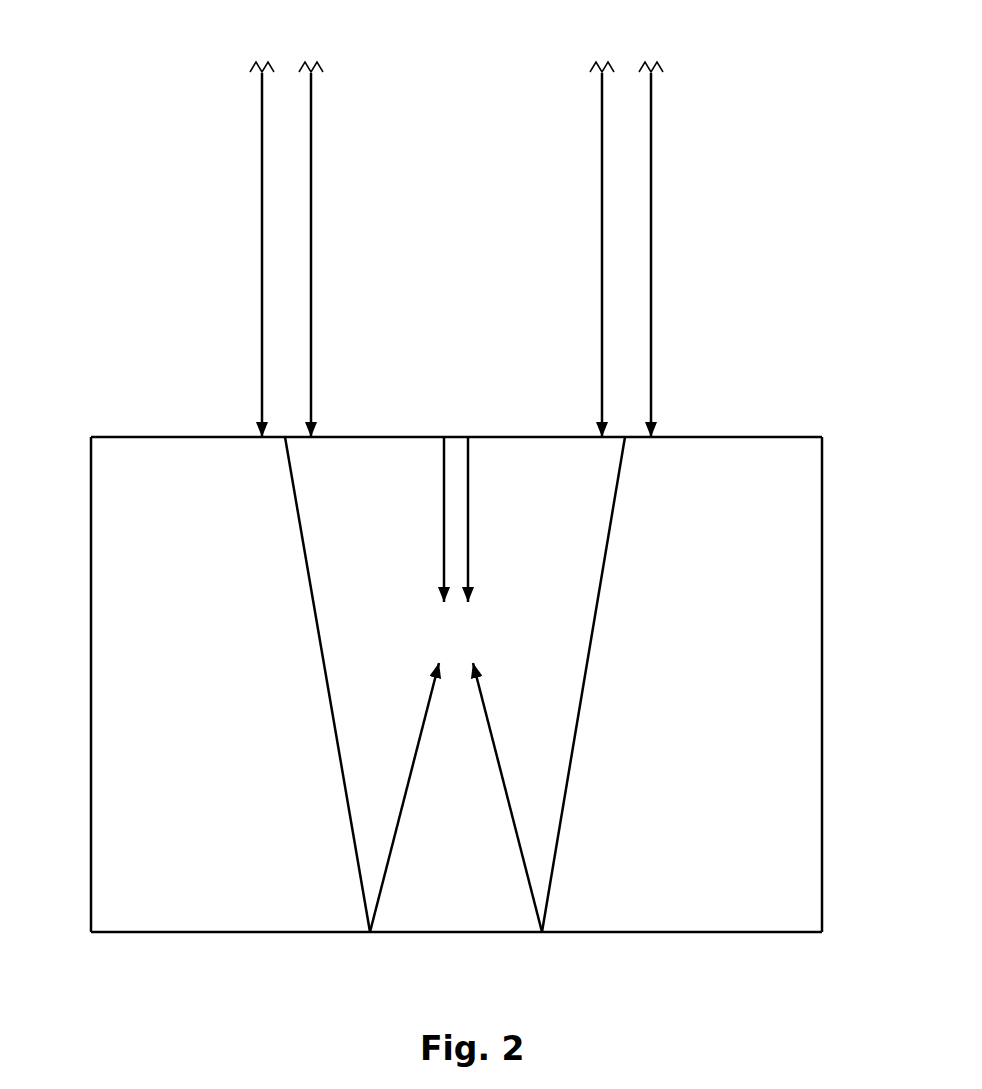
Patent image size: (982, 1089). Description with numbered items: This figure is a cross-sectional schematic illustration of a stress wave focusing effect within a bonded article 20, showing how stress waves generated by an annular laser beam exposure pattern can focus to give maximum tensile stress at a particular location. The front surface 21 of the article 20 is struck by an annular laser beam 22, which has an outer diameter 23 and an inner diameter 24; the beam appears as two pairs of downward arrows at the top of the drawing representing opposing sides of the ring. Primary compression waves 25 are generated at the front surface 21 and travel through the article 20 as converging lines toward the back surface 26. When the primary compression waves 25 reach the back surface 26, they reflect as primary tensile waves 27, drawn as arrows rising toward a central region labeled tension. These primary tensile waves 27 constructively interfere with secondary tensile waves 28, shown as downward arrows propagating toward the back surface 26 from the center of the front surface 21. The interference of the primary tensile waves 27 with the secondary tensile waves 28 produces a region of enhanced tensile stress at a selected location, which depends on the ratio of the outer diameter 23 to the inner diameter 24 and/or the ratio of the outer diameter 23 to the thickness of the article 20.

The article 20 is at (791, 389).
The front surface 21 is at (133, 433).
The annular laser beam 22 is at (735, 93).
The outer diameter 23 is at (283, 416).
The inner diameter 24 is at (478, 298).
The primary compression waves 25 is at (318, 672).
The back surface 26 is at (137, 928).
The primary tensile waves 27 is at (402, 837).
The secondary tensile waves 28 is at (447, 513).